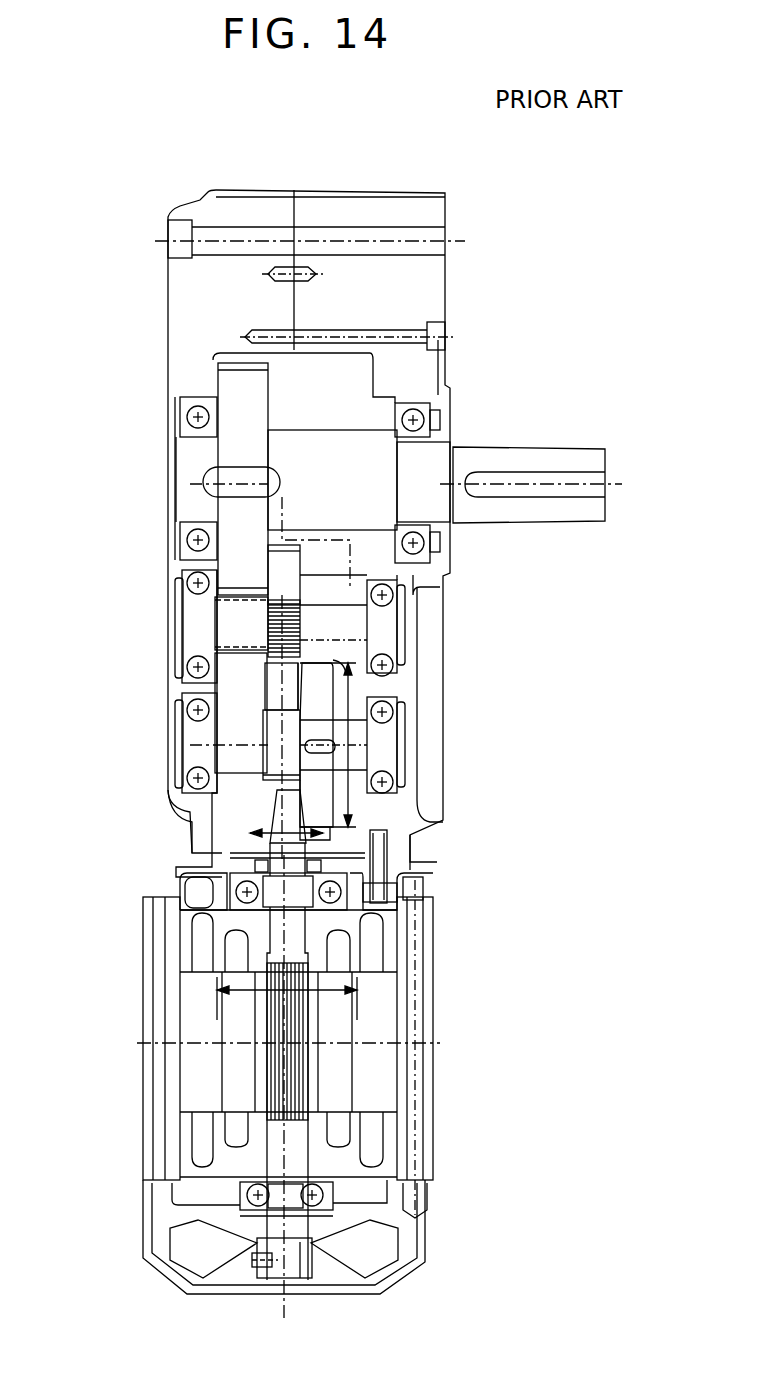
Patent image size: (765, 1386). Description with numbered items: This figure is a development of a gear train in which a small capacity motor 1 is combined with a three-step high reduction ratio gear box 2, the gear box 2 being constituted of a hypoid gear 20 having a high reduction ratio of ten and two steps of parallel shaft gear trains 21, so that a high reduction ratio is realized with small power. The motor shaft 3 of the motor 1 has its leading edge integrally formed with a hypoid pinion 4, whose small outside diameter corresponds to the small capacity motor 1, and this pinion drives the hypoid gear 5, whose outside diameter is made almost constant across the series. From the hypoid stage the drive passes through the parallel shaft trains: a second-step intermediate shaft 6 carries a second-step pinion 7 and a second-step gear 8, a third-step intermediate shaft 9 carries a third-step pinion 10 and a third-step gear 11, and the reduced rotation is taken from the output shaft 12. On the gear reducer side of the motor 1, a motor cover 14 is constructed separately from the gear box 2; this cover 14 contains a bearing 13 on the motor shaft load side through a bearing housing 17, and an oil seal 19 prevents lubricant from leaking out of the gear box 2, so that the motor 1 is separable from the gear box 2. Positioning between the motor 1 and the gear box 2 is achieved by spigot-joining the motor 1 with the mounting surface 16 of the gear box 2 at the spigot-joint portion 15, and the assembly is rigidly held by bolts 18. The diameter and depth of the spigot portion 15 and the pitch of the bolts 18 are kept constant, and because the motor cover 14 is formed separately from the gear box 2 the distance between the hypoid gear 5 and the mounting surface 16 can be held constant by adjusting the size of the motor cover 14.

The small capacity motor 1 is at (423, 1117).
The gear box 2 is at (255, 208).
The motor shaft 3 is at (293, 937).
The hypoid pinion 4 is at (310, 843).
The hypoid gear 5 is at (320, 783).
The second-step intermediate shaft 6 is at (378, 737).
The second-step pinion 7 is at (280, 682).
The second-step gear 8 is at (280, 733).
The third-step intermediate shaft 9 is at (343, 620).
The third-step pinion 10 is at (232, 647).
The third-step gear 11 is at (238, 570).
The output shaft 12 is at (478, 458).
The bearing 13 is at (337, 897).
The motor cover 14 is at (223, 895).
The spigot-joint portion 15 is at (288, 125).
The mounting surface 16 is at (192, 848).
The bearing housing 17 is at (427, 903).
The bolt 18 is at (397, 883).
The oil seal 19 is at (323, 862).
The hypoid gear 20 is at (313, 808).
The parallel shaft gear trains 21 is at (237, 760).